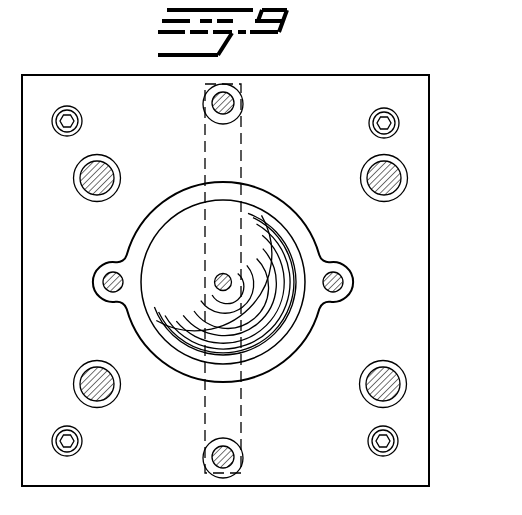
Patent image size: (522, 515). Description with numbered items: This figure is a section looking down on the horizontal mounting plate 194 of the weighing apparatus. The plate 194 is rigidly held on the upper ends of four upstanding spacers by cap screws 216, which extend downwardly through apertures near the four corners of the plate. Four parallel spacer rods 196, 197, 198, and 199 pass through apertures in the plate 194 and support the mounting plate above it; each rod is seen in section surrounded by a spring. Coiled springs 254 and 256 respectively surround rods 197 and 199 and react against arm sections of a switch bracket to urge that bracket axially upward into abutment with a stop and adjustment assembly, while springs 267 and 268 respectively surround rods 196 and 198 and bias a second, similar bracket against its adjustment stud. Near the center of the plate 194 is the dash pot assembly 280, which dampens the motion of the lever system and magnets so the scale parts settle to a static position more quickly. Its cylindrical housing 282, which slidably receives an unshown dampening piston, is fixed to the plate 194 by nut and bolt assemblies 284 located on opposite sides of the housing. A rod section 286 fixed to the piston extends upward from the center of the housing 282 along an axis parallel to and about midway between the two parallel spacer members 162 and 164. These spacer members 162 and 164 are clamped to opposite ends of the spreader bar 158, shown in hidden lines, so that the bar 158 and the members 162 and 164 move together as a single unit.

The mounting plate 194 is at (423, 361).
The spreader bar 158 is at (204, 132).
The spacer member 162 is at (233, 101).
The spacer member 164 is at (233, 452).
The cap screws 216 is at (75, 112).
The spacer rod 199 is at (100, 165).
The coiled spring 256 is at (107, 193).
The spacer rod 198 is at (384, 165).
The spring 268 is at (370, 194).
The spacer rod 197 is at (109, 386).
The coiled spring 254 is at (86, 366).
The spacer rod 196 is at (380, 368).
The spring 267 is at (366, 394).
The dash pot assembly 280 is at (265, 206).
The cylindrical housing 282 is at (305, 257).
The nut and bolt assemblies 284 is at (107, 276).
The rod section 286 is at (214, 283).